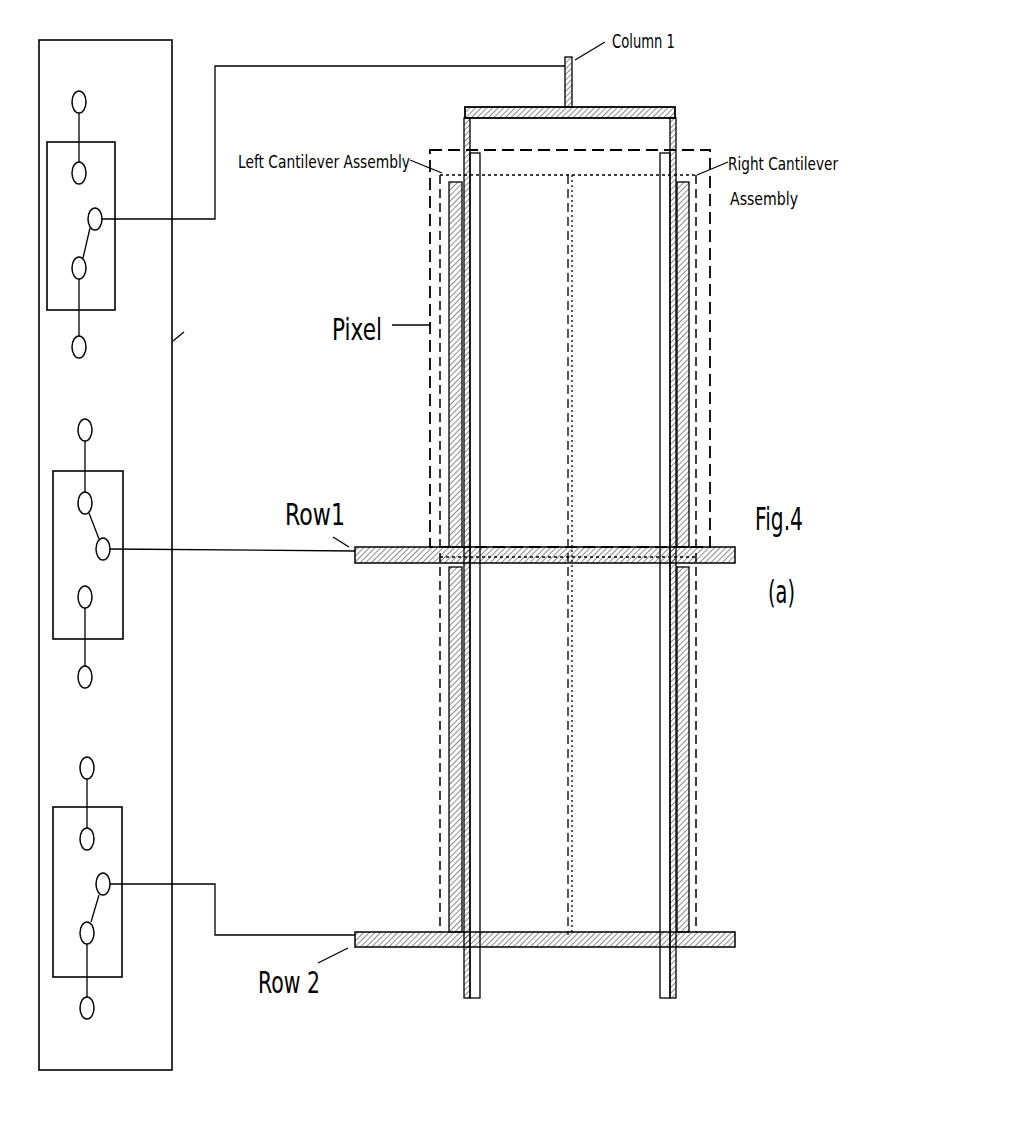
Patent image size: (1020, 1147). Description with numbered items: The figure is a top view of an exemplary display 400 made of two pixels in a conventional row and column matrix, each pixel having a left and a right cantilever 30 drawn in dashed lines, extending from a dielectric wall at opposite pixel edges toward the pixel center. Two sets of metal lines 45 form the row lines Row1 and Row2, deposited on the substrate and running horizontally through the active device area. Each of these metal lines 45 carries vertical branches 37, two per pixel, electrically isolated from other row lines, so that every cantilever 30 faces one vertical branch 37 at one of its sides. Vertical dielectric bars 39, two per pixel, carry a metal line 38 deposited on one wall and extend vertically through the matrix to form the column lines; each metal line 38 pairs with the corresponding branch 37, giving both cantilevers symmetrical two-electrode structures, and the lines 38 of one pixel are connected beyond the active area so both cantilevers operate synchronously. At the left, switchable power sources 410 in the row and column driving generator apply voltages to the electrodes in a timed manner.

The switchable power sources 410 is at (178, 487).
The display 400 is at (615, 542).
The vertical branch 37 is at (453, 463).
The cantilever 30 is at (442, 752).
The metal lines 45 is at (383, 941).
The metal line 38 is at (674, 965).
The vertical dielectric bar 39 is at (665, 972).